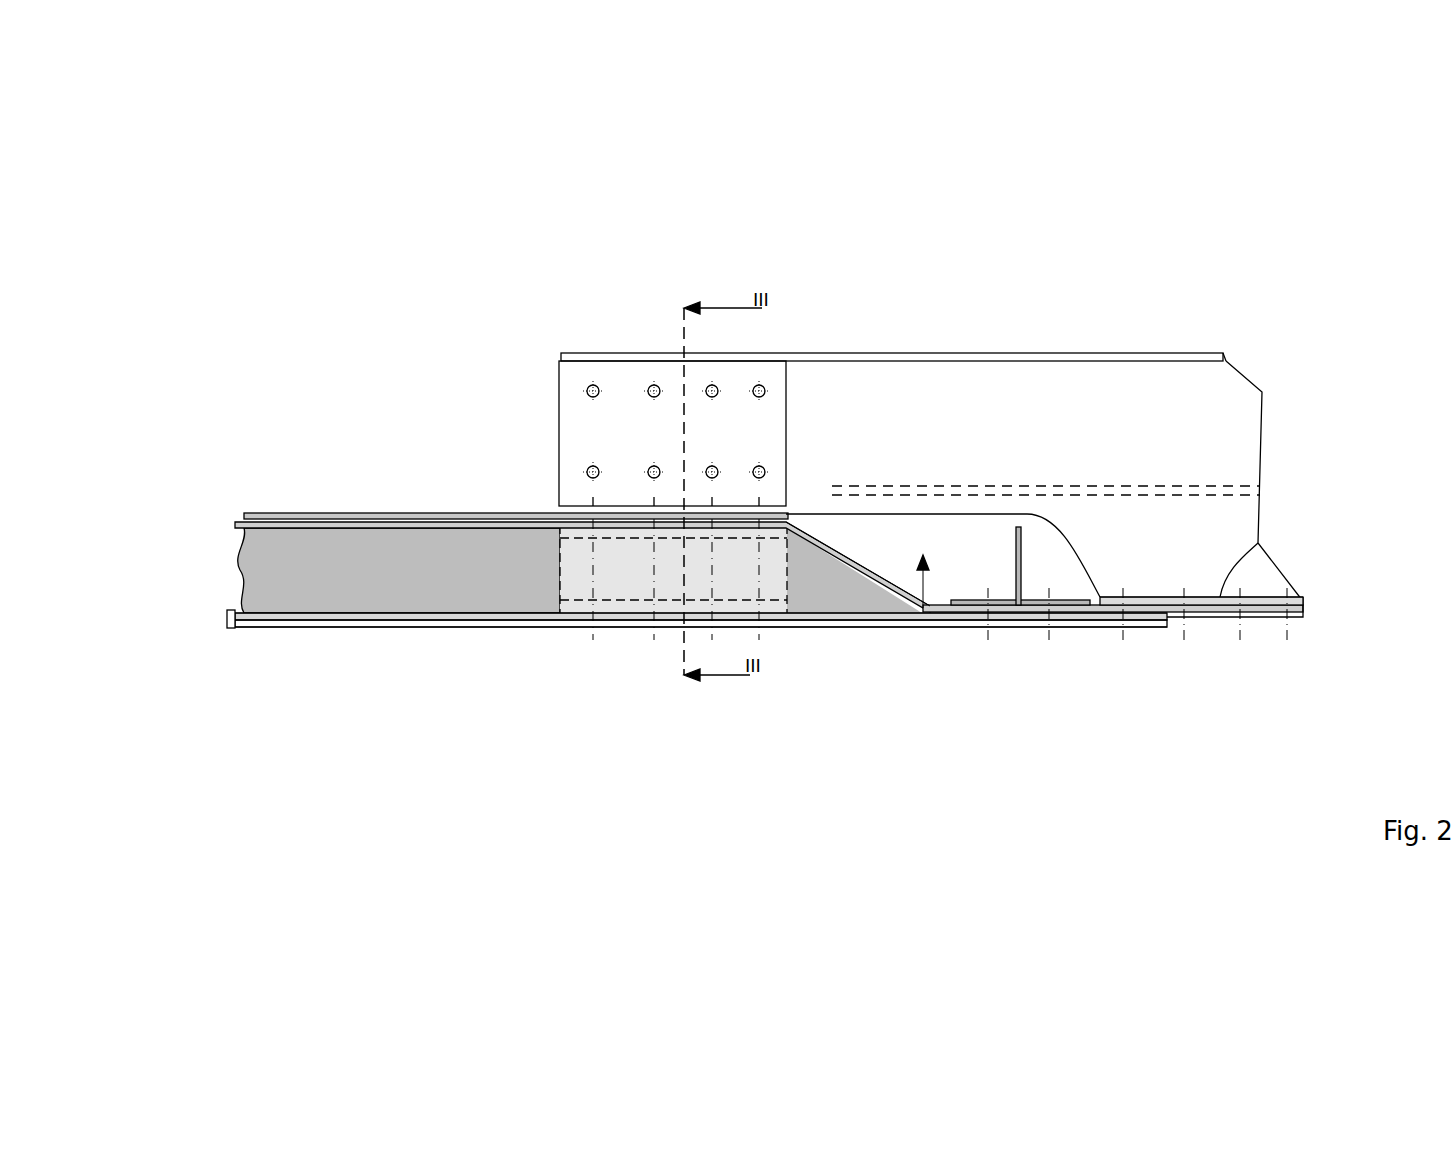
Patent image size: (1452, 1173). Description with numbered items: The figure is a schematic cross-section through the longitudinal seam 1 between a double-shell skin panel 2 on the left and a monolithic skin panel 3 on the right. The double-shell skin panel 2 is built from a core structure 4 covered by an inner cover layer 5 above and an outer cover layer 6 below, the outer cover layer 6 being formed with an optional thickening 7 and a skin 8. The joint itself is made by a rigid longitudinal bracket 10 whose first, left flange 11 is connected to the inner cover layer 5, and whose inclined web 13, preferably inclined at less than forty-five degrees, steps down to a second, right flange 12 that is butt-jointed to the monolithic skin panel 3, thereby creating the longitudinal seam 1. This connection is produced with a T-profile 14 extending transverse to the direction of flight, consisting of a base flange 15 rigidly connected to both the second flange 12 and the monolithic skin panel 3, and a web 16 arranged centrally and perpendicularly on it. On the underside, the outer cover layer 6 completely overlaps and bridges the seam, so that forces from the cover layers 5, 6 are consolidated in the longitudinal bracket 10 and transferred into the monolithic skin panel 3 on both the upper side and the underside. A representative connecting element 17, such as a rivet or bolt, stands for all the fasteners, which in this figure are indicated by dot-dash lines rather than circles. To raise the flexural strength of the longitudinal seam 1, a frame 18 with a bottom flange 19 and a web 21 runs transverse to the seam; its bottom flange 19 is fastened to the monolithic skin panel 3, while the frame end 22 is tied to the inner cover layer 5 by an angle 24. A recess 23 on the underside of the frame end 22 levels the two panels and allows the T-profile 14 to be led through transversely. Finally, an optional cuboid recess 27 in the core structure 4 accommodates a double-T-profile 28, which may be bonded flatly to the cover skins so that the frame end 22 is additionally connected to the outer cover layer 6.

The longitudinal seam 1 is at (1027, 632).
The double-shell skin panel 2 is at (263, 655).
The monolithic skin panel 3 is at (1263, 618).
The core structure 4 is at (580, 570).
The inner cover layer 5 is at (235, 520).
The outer cover layer 6 is at (227, 620).
The thickening 7 is at (340, 613).
The skin 8 is at (402, 627).
The longitudinal bracket 10 is at (495, 503).
The first flange 11 is at (255, 513).
The second flange 12 is at (950, 607).
The web 13 is at (862, 556).
The T-profile 14 is at (1018, 540).
The base flange 15 is at (1063, 603).
The web 16 is at (1018, 566).
The connecting element 17 is at (1123, 640).
The frame 18 is at (1240, 357).
The bottom flange 19 is at (1258, 543).
The web 21 is at (1248, 443).
The frame end 22 is at (628, 340).
The recess 23 is at (927, 605).
The angle 24 is at (788, 470).
The recess 27 is at (605, 565).
The double-T-profile 28 is at (620, 600).